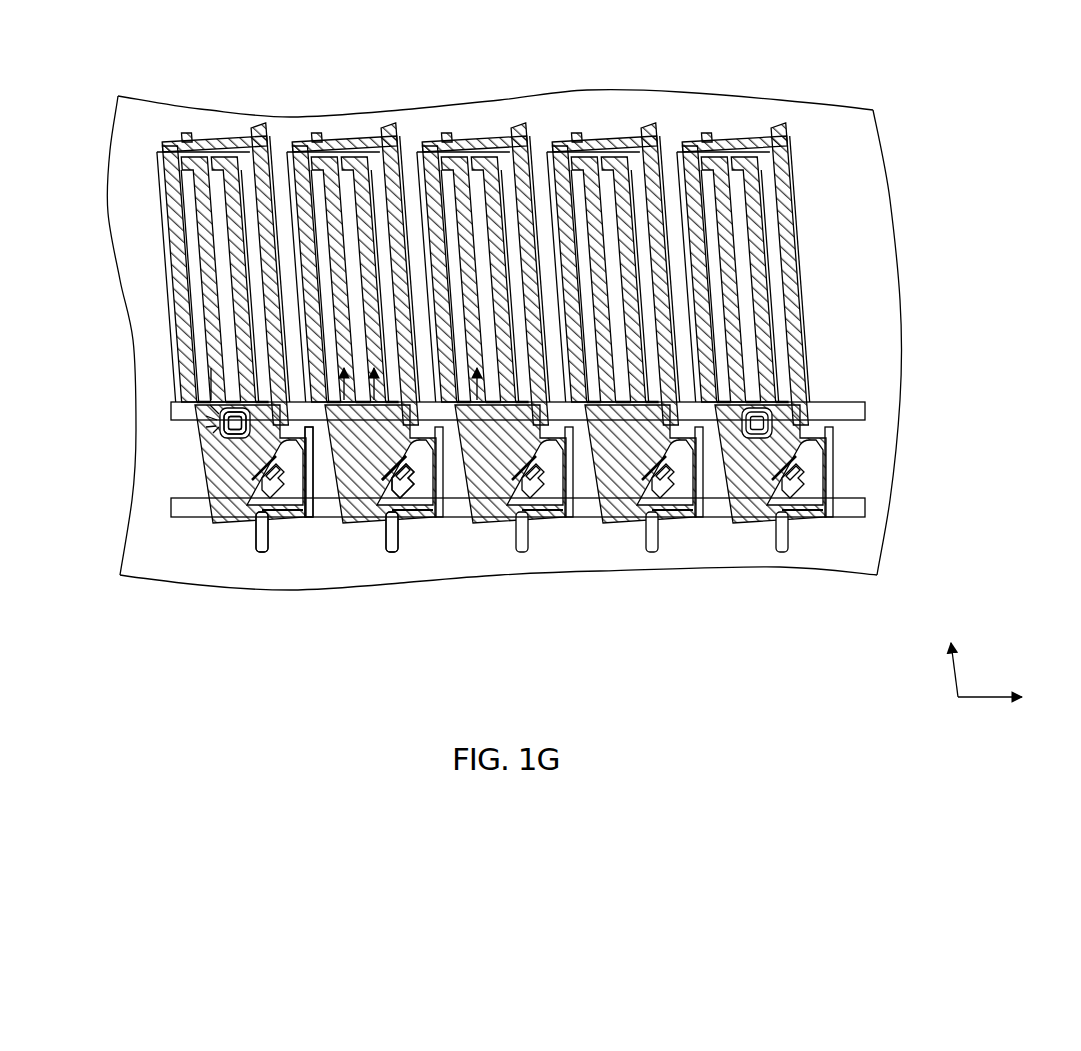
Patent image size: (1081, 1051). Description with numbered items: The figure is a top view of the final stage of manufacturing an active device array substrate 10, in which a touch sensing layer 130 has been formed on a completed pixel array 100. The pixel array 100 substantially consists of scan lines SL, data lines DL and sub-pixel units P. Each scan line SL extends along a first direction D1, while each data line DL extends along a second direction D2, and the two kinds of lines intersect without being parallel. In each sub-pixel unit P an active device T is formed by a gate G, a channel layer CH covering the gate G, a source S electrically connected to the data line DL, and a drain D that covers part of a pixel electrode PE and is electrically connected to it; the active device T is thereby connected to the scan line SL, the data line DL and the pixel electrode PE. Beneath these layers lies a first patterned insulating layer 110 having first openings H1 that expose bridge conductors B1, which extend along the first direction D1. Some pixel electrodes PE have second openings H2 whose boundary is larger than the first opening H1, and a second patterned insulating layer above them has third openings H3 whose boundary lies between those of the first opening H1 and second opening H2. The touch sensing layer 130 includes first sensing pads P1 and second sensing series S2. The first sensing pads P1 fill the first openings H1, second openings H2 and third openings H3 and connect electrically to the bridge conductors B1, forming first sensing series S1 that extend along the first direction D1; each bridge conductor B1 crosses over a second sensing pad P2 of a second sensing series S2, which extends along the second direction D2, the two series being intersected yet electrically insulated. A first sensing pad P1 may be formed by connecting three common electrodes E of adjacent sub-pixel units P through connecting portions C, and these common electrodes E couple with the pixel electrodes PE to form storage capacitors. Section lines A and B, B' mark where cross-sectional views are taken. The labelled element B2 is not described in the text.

The pixel array 100 is at (836, 530).
The active device array substrate 10 is at (486, 388).
The data line DL is at (260, 134).
The first patterned insulating layer 110 is at (446, 401).
The first sensing pad P1 is at (210, 518).
The bridge conductor B1 is at (241, 520).
The first opening H1 is at (218, 412).
The second opening H2 is at (203, 462).
The third opening H3 is at (203, 430).
The sub-pixel unit P is at (362, 425).
The pixel electrode PE is at (337, 513).
The active device T is at (372, 648).
The drain D is at (367, 513).
The channel layer CH is at (392, 513).
The source S is at (423, 513).
The gate G is at (297, 520).
The scan line SL is at (322, 513).
The second sensing series S2 is at (559, 425).
The second sensing pad P2 is at (520, 541).
The common electrode E is at (497, 523).
The connecting portion C is at (570, 522).
The second bridge B2 is at (660, 525).
The first sensing series S1 is at (698, 645).
The touch sensing layer 130 is at (105, 623).
The Line A-A' A is at (277, 371).
The Line B-B' B is at (373, 371).
The Line B- B' is at (476, 371).
The first direction D1 is at (1006, 699).
The second direction D2 is at (953, 655).